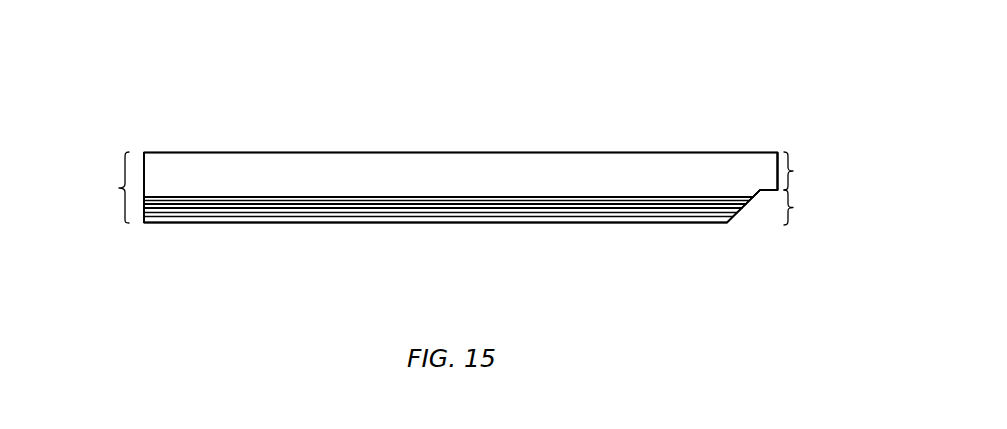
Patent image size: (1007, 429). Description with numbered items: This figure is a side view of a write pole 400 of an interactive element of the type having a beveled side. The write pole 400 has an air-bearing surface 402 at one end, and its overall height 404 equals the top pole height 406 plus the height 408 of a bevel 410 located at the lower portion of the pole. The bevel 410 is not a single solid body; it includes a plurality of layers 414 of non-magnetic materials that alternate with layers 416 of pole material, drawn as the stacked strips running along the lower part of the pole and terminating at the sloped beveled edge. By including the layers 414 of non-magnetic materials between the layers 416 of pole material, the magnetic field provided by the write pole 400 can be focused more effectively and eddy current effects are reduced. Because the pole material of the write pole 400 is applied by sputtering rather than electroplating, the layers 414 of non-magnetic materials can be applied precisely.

The write pole 400 is at (357, 130).
The air-bearing surface 402 is at (778, 154).
The height 404 is at (425, 187).
The top pole height 406 is at (493, 174).
The height of bevel 408 is at (493, 207).
The bevel 410 is at (742, 208).
The layers of non-magnetic materials 414 is at (522, 199).
The layers of pole material 416 is at (612, 199).